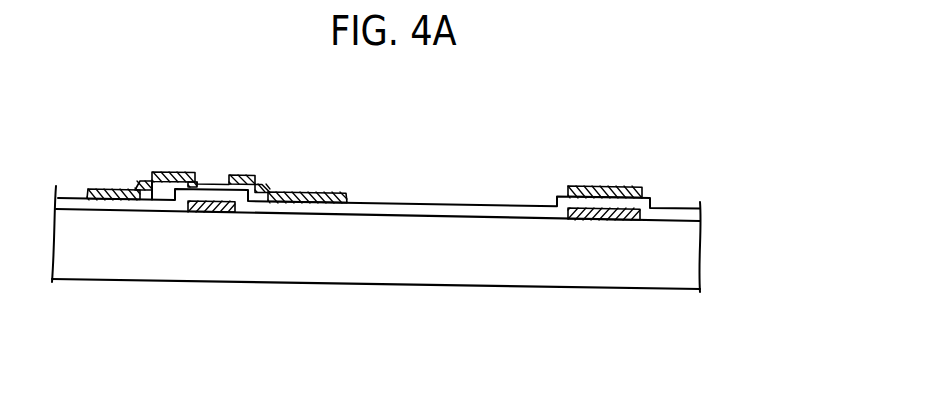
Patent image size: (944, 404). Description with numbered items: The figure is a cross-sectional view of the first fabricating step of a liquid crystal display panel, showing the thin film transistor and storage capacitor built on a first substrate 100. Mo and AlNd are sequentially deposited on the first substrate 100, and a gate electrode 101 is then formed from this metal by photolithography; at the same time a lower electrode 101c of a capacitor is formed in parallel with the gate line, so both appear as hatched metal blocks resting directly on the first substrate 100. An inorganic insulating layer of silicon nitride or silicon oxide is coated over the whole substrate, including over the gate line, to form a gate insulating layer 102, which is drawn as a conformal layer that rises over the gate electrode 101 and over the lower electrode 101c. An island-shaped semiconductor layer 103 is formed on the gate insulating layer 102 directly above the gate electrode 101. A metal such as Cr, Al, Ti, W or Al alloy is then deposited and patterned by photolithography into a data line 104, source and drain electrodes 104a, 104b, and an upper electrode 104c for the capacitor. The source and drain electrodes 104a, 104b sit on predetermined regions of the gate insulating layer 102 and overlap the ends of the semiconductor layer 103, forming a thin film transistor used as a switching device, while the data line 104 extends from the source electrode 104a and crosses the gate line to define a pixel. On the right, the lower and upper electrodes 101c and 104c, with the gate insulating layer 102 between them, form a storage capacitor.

The first substrate 100 is at (692, 252).
The gate electrode 101 is at (215, 212).
The lower electrode 101c is at (610, 220).
The gate insulating layer 102 is at (695, 213).
The semiconductor layer 103 is at (210, 184).
The data line 104 is at (108, 189).
The source electrode 104a is at (177, 172).
The drain electrode 104b is at (312, 192).
The upper electrode 104c is at (605, 186).